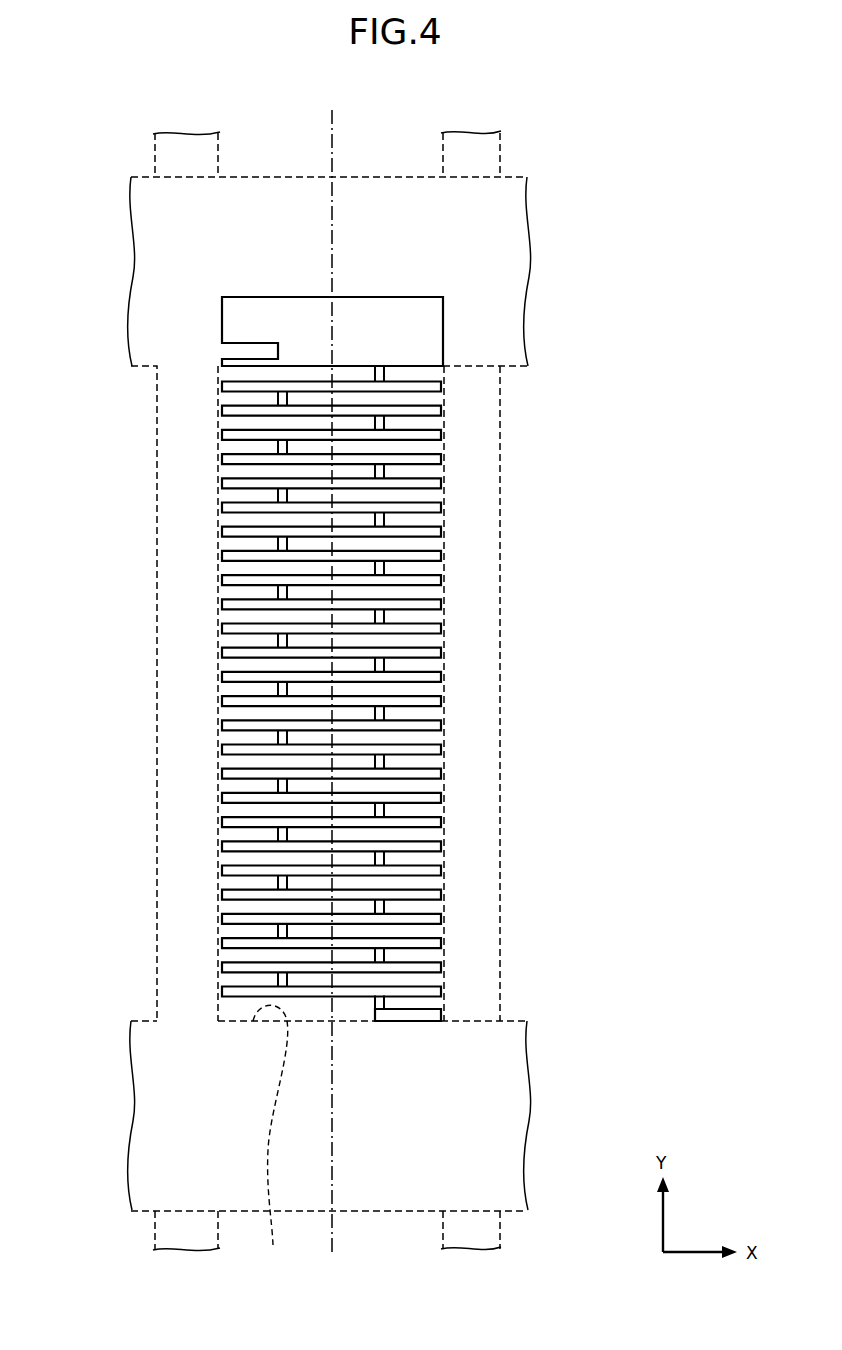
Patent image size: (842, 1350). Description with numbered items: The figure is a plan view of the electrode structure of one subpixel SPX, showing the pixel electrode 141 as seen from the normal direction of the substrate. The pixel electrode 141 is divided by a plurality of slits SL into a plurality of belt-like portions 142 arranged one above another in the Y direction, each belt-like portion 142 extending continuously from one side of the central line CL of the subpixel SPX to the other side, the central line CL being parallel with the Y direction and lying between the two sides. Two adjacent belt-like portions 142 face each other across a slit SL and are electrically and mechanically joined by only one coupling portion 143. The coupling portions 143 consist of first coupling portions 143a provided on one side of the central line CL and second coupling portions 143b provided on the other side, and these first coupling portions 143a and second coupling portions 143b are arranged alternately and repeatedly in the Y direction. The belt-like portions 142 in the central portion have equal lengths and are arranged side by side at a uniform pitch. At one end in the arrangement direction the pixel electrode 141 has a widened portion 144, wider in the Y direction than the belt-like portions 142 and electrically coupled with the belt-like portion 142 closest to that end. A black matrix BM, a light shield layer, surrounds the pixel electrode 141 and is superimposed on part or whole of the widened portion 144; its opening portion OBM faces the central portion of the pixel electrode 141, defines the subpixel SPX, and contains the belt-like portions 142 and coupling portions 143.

The pixel electrode 141 is at (392, 1034).
The belt-like portions 142 is at (228, 359).
The coupling portions 143 is at (457, 689).
The first coupling portions 143a is at (384, 374).
The second coupling portions 143b is at (287, 399).
The widened portion 144 is at (280, 316).
The slit SL is at (240, 664).
The subpixel SPX is at (572, 186).
The black matrix BM is at (405, 243).
The opening portion OBM is at (268, 1137).
The central line CL is at (338, 128).